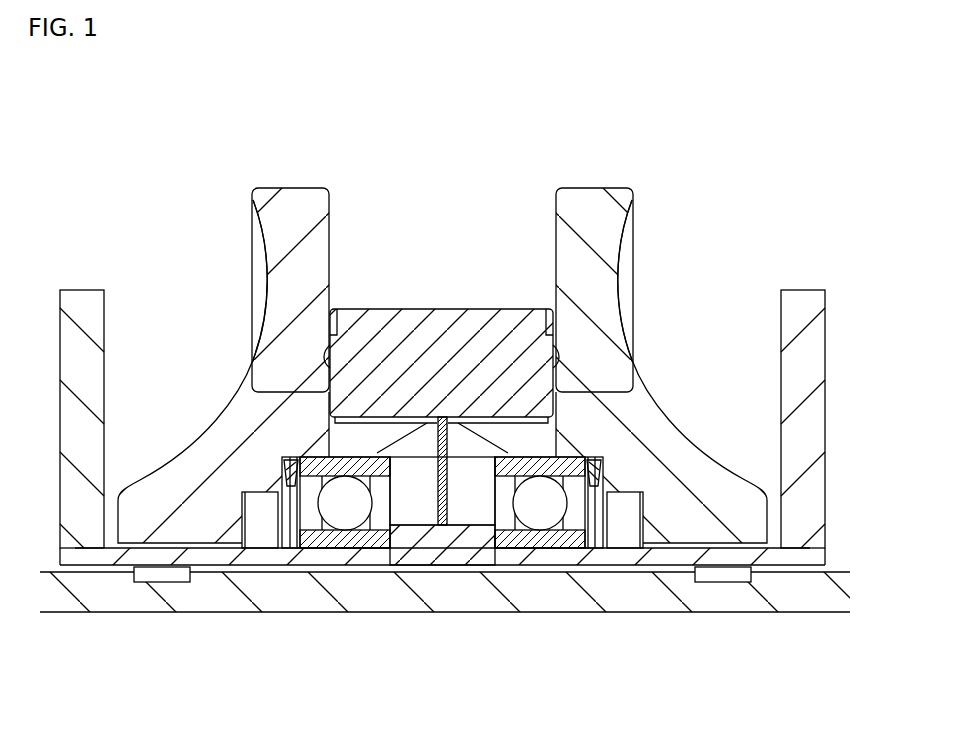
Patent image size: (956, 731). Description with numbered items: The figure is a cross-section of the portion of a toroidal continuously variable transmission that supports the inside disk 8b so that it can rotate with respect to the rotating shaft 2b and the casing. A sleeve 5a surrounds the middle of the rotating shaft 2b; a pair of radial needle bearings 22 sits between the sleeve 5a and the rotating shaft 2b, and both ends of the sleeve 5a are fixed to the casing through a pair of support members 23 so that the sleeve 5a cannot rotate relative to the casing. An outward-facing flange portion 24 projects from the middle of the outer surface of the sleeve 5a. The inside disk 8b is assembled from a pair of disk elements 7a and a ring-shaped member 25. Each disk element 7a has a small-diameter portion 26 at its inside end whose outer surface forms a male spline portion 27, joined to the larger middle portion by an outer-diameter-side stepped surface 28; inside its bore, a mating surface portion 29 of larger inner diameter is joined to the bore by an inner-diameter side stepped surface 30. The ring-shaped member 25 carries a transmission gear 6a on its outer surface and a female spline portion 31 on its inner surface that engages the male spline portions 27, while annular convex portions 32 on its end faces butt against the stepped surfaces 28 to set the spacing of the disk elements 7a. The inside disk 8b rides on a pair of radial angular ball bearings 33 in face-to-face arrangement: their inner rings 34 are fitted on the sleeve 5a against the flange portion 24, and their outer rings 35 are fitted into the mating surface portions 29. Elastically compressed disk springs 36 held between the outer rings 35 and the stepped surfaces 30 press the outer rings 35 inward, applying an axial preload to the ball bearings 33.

The rotating shaft 2b is at (808, 600).
The sleeve 5a is at (600, 568).
The transmission gear 6a is at (447, 330).
The disk element 7a is at (292, 180).
The inside disk 8b is at (495, 180).
The radial needle bearing 22 is at (165, 578).
The support member 23 is at (82, 318).
The outward-facing flange portion 24 is at (436, 512).
The ring-shaped member 25 is at (477, 298).
The small-diameter portion 26 is at (377, 445).
The male spline portion 27 is at (410, 425).
The outer-diameter-side stepped surface 28 is at (370, 440).
The mating surface portion 29 is at (305, 548).
The inner-diameter side stepped surface 30 is at (253, 413).
The female spline portion 31 is at (441, 455).
The annular convex portion 32 is at (272, 320).
The radial angular ball bearing 33 is at (360, 560).
The inner ring 34 is at (320, 522).
The outer ring 35 is at (402, 560).
The disk spring 36 is at (290, 482).